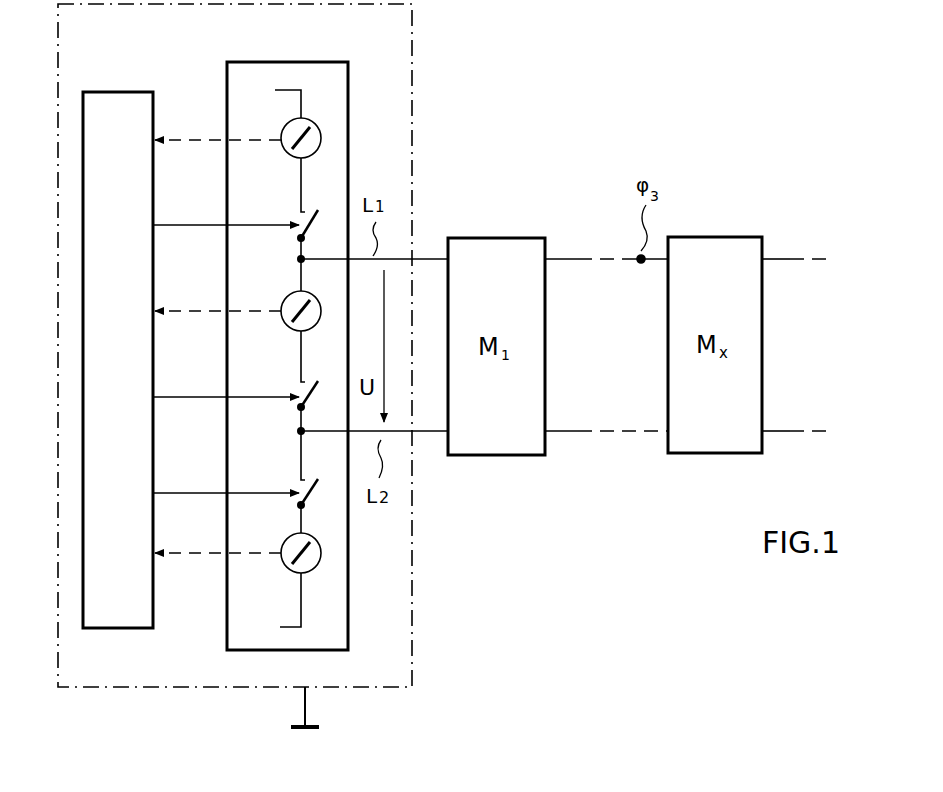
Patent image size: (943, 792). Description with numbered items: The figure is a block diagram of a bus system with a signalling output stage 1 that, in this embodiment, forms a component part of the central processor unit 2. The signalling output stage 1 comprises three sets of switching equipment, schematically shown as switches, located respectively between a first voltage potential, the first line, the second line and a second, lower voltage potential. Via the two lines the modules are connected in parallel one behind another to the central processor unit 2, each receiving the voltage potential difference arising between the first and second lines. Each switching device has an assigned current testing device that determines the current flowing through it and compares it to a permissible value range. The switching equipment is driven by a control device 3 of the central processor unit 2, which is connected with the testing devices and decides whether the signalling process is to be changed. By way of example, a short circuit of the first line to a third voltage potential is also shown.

The signalling output stage 1 is at (304, 62).
The central processor unit 2 is at (412, 50).
The control device 3 is at (122, 92).